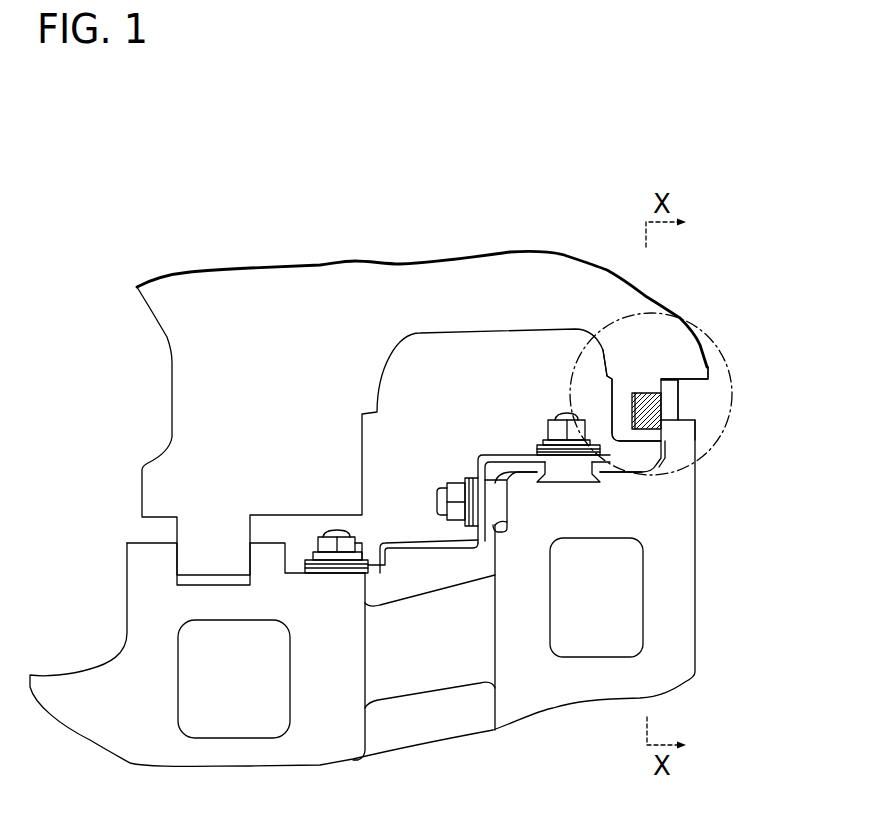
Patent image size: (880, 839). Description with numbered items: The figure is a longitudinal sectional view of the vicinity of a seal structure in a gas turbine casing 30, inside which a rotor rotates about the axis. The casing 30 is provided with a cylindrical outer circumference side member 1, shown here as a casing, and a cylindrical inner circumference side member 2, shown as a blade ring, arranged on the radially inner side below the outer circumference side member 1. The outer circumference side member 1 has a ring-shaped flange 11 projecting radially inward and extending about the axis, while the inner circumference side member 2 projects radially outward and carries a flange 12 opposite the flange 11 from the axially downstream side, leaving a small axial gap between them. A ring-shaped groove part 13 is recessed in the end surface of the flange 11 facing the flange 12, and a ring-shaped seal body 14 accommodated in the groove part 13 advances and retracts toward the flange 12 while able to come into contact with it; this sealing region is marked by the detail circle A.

The outer circumference side member 1 is at (513, 280).
The inner circumference side member 2 is at (680, 600).
The flange 11 is at (598, 402).
The flange 12 is at (690, 398).
The groove part 13 is at (660, 421).
The seal body 14 is at (664, 385).
The casing 30 is at (646, 138).
The detail region A is at (727, 340).